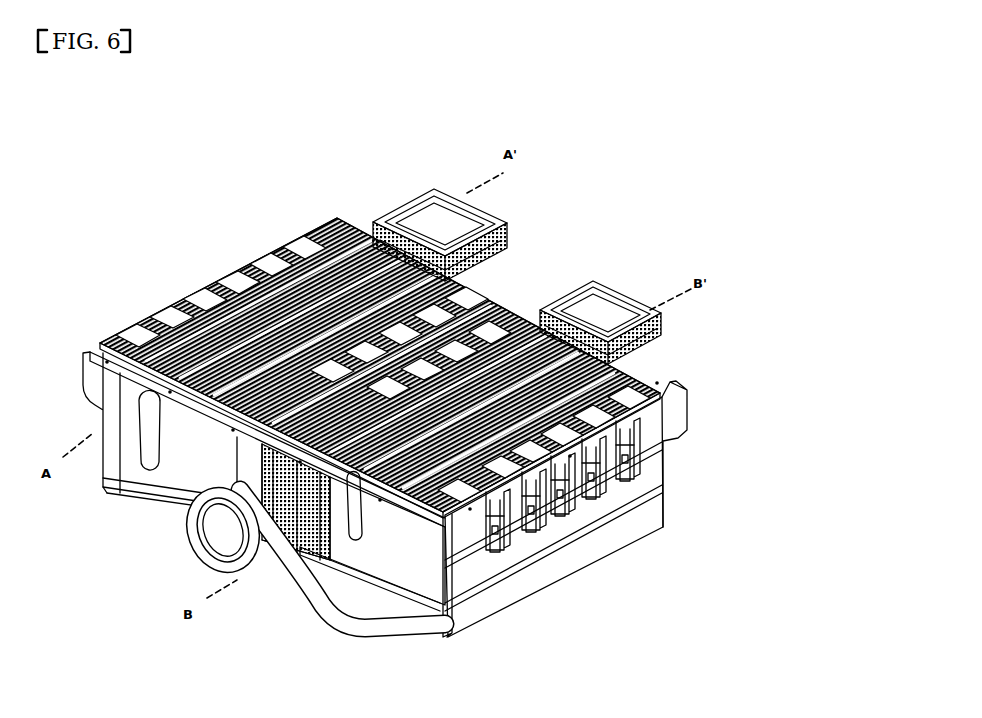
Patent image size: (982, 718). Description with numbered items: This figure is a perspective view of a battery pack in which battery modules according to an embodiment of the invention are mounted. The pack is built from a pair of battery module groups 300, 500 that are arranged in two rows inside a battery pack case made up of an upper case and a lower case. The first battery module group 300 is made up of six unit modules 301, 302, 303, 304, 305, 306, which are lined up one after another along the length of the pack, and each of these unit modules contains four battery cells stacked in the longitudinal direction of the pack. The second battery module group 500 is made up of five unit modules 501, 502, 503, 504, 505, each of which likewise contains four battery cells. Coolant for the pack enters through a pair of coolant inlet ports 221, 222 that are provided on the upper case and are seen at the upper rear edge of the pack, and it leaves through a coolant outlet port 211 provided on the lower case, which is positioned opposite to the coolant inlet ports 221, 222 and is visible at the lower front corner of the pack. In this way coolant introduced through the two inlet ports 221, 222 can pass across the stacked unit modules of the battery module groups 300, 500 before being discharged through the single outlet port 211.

The battery module group 300 is at (284, 142).
The unit module 301 is at (137, 334).
The unit module 302 is at (173, 313).
The unit module 303 is at (210, 297).
The unit module 304 is at (242, 268).
The unit module 305 is at (283, 247).
The unit module 306 is at (322, 210).
The coolant inlet port 221 is at (508, 226).
The coolant inlet port 222 is at (641, 266).
The coolant outlet port 211 is at (217, 567).
The battery module group 500 is at (497, 684).
The unit module 501 is at (483, 613).
The unit module 502 is at (530, 593).
The unit module 503 is at (567, 570).
The unit module 504 is at (607, 547).
The unit module 505 is at (643, 527).